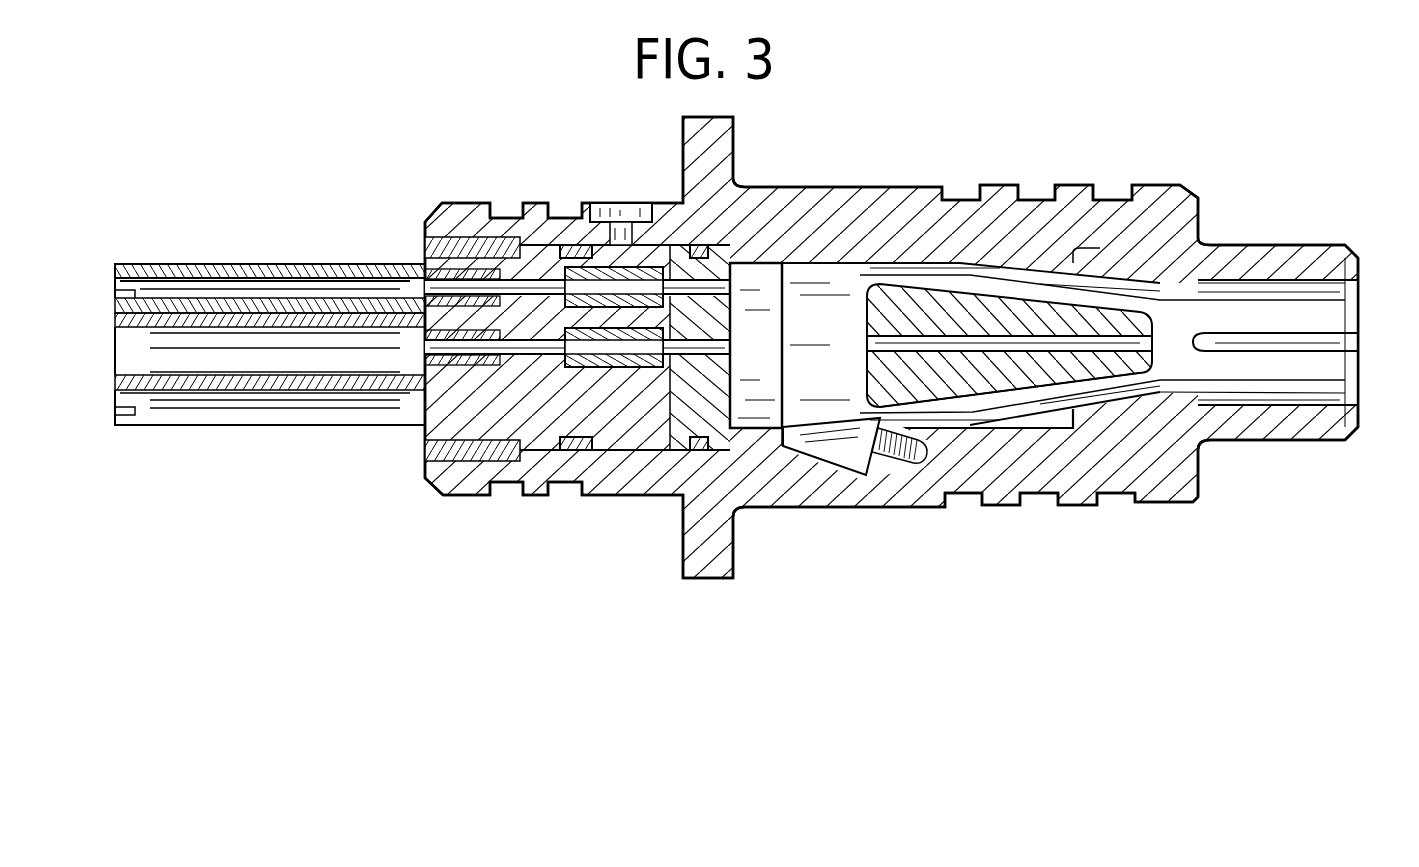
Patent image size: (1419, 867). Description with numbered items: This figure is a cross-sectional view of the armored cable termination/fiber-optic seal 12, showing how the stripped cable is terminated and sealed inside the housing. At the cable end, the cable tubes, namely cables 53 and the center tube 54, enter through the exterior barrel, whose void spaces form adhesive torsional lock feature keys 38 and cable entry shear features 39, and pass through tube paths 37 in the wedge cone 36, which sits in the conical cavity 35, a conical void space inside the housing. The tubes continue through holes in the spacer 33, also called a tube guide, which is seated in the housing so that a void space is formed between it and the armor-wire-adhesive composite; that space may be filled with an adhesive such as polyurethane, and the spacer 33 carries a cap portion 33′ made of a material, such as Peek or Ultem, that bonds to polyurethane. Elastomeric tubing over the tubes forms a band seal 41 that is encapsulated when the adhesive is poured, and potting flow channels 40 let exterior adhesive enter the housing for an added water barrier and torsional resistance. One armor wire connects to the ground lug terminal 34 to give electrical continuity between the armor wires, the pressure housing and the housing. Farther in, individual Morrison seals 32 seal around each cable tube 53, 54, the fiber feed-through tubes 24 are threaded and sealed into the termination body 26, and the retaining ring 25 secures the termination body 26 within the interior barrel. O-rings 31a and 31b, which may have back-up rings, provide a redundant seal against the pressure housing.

The armored cable termination/fiber-optic seal 12 is at (1127, 62).
The fiber feed-through tube 24 is at (118, 268).
The retaining ring 25 is at (425, 243).
The termination body 26 is at (428, 432).
The O-ring 31a is at (694, 246).
The O-ring 31b is at (568, 246).
The Morrison seal 32 is at (556, 266).
The spacer 33 is at (772, 442).
The cap portion 33′ is at (787, 446).
The ground lug terminal 34 is at (868, 470).
The conical cavity 35 is at (1160, 420).
The wedge cone 36 is at (988, 380).
The tube path 37 is at (1103, 354).
The adhesive torsional lock feature key 38 is at (1083, 251).
The cable entry shear feature 39 is at (1346, 432).
The potting flow channel 40 is at (1362, 328).
The band seal 41 is at (848, 302).
The cable tube 53 is at (742, 312).
The center tube 54 is at (770, 302).